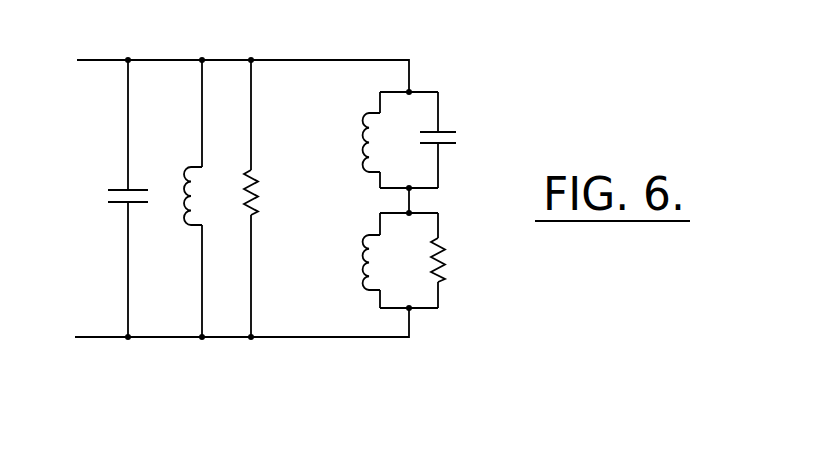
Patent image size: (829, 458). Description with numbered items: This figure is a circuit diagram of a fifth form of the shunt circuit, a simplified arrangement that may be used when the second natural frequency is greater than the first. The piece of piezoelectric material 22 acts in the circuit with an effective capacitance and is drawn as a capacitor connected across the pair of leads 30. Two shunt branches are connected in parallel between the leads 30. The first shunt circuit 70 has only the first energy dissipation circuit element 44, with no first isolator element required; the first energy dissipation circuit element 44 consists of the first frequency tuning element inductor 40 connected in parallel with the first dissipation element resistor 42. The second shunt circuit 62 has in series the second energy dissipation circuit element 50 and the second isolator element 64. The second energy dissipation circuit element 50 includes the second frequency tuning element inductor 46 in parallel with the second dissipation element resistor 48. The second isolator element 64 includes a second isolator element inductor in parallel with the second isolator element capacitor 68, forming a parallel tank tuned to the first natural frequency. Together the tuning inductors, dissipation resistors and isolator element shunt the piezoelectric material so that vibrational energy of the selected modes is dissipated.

The pair of leads 30 is at (152, 59).
The first shunt circuit 70 is at (233, 55).
The second shunt circuit 62 is at (428, 58).
The piece of piezoelectric material 22 is at (113, 189).
The first energy dissipation circuit element 44 is at (278, 159).
The first frequency tuning element inductor 40 is at (188, 222).
The first dissipation element resistor 42 is at (257, 210).
The second isolator element 64 is at (368, 169).
The second isolator element capacitor 68 is at (446, 148).
The second energy dissipation circuit element 50 is at (490, 213).
The second frequency tuning element inductor 46 is at (368, 290).
The second dissipation element resistor 48 is at (445, 281).